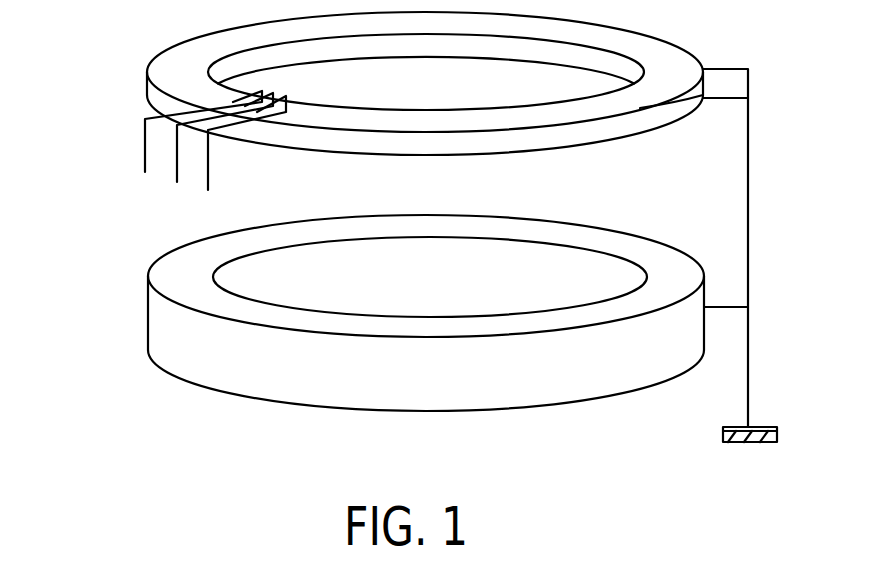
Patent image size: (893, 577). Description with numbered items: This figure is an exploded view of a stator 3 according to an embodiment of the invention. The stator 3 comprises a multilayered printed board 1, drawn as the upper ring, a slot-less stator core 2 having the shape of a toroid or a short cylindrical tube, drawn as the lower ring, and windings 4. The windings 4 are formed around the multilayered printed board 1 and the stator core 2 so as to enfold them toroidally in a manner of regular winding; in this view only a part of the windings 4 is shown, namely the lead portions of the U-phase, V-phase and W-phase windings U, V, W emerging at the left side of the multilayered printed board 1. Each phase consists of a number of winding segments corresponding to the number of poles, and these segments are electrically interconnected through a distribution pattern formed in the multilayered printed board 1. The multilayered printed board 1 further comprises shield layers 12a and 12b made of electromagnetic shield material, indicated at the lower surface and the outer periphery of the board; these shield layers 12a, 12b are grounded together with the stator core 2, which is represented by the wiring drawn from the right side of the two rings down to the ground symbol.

The multilayered printed board 1 is at (394, 112).
The slot-less stator core 2 is at (369, 324).
The stator 3 is at (100, 255).
The windings 4 is at (173, 165).
The U-phase winding U is at (142, 167).
The V-phase winding V is at (175, 178).
The W-phase winding W is at (205, 183).
The shield layer 12a is at (590, 145).
The shield layer 12b is at (650, 110).